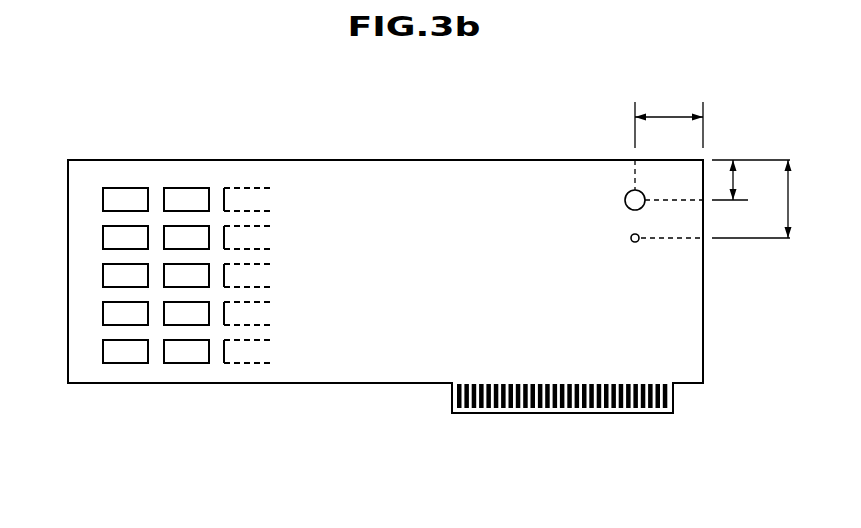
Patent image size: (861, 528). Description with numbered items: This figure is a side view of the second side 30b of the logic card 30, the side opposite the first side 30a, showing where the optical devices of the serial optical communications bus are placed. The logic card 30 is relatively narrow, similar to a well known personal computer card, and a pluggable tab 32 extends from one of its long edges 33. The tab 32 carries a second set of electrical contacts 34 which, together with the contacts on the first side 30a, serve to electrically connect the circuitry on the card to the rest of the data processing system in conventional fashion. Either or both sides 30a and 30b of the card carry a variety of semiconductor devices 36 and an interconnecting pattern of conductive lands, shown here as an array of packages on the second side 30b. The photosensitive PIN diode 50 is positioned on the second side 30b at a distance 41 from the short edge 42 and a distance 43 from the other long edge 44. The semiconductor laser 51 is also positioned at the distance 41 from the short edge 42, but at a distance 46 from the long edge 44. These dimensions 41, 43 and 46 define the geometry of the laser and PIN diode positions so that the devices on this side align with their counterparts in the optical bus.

The logic card 30 is at (387, 283).
The first side 30a is at (285, 177).
The second side 30b is at (372, 172).
The pluggable tab 32 is at (450, 402).
The long edge 33 is at (232, 383).
The second set of electrical contacts 34 is at (528, 382).
The semiconductor devices 36 is at (103, 348).
The distance from short edge 41 is at (667, 117).
The short edge 42 is at (703, 298).
The distance from long edge to PIN diode 43 is at (745, 180).
The long edge 44 is at (462, 160).
The distance from long edge to laser 46 is at (787, 208).
The photosensitive PIN diode 50 is at (625, 200).
The semiconductor laser 51 is at (631, 237).